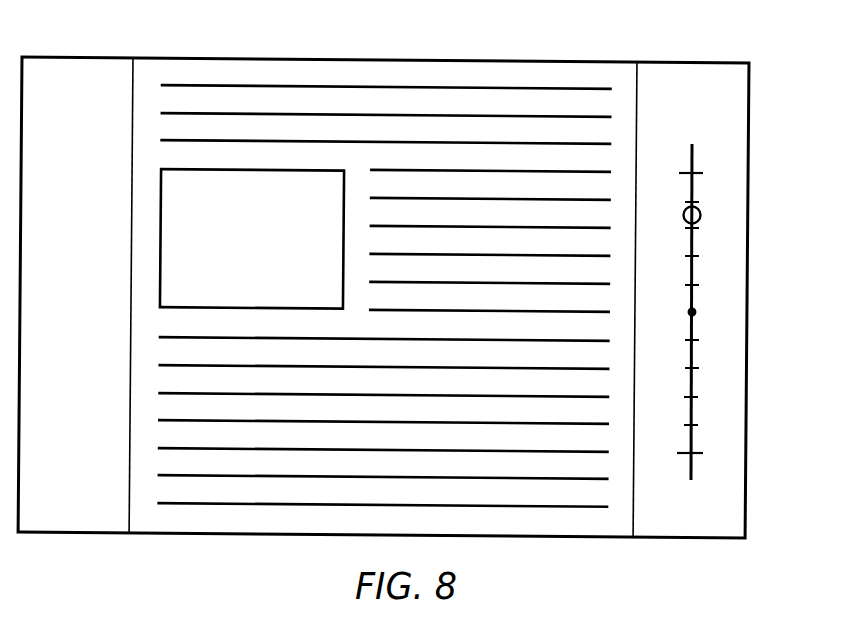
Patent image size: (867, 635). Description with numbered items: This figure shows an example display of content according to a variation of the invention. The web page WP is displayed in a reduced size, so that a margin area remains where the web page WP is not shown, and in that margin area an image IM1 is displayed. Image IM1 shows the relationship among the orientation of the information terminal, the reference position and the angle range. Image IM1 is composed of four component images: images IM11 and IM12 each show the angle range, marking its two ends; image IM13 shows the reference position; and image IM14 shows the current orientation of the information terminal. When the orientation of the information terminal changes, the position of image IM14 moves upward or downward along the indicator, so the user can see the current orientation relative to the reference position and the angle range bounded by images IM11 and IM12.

The web page WP is at (522, 58).
The image IM1 is at (722, 138).
The image IM11 is at (703, 173).
The image IM12 is at (703, 453).
The image IM13 is at (695, 311).
The image IM14 is at (701, 214).